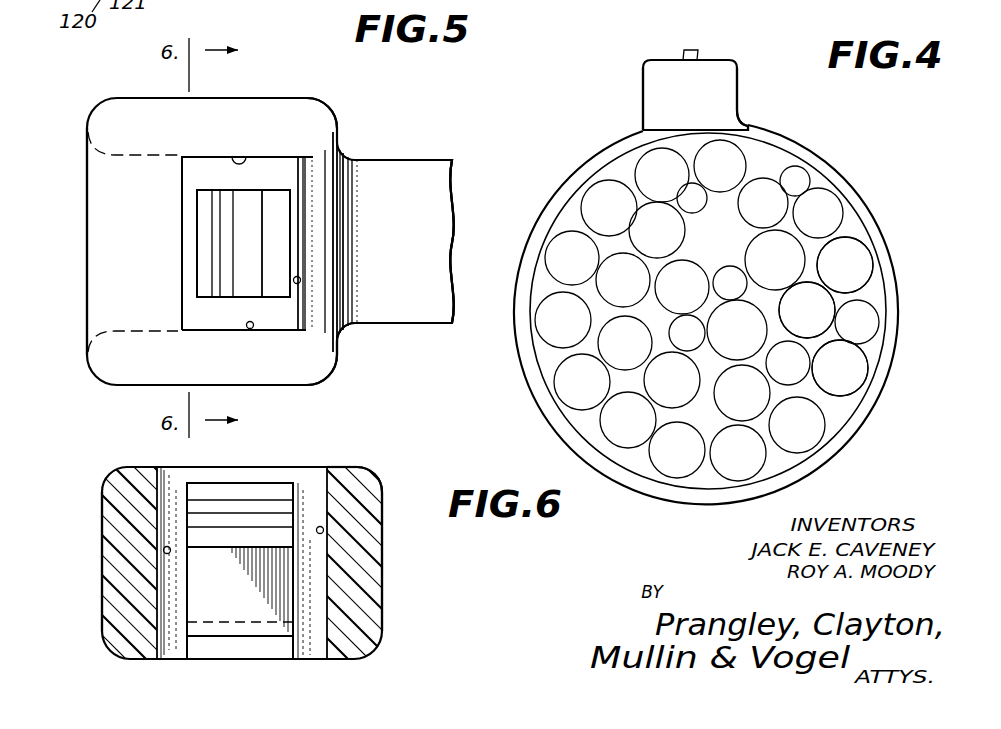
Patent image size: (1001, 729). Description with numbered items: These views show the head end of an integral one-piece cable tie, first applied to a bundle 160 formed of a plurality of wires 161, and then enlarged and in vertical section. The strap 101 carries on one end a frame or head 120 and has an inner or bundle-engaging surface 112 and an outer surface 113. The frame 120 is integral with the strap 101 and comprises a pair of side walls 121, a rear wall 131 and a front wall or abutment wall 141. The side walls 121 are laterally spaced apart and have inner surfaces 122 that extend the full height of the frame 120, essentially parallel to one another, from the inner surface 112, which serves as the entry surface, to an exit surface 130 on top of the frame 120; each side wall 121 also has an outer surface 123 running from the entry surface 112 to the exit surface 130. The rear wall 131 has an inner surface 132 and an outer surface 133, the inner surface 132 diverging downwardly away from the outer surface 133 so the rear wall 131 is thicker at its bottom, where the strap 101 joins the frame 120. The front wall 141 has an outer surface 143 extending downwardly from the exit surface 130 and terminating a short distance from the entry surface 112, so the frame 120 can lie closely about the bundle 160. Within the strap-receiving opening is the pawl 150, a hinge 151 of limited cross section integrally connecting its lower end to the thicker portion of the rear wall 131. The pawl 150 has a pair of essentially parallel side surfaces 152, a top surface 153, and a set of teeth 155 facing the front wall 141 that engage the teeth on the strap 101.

In FIG. 5, the strap 101 is at (422, 186).
In FIG. 4, the strap 101 is at (577, 185).
In FIG. 6, the inner or bundle-engaging surface 112 is at (148, 660).
In FIG. 4, the inner or bundle-engaging surface 112 is at (745, 130).
In FIG. 5, the outer surface 113 is at (389, 264).
In FIG. 5, the frame or head 120 is at (108, 126).
In FIG. 6, the frame or head 120 is at (112, 465).
In FIG. 4, the frame or head 120 is at (655, 71).
In FIG. 5, the side walls 121 is at (236, 116).
In FIG. 6, the side walls 121 is at (135, 531).
In FIG. 5, the inner surfaces 122 is at (243, 187).
In FIG. 6, the inner surfaces 122 is at (164, 552).
In FIG. 5, the outer surface 123 is at (217, 98).
In FIG. 6, the outer surface 123 is at (103, 599).
In FIG. 4, the outer surface 123 is at (705, 106).
In FIG. 5, the exit surface 130 is at (152, 118).
In FIG. 6, the exit surface 130 is at (147, 465).
In FIG. 4, the exit surface 130 is at (722, 58).
In FIG. 5, the rear wall or end wall 131 is at (338, 205).
In FIG. 6, the rear wall or end wall 131 is at (294, 465).
In FIG. 5, the inner surface 132 is at (300, 283).
In FIG. 6, the inner surface 132 is at (338, 466).
In FIG. 5, the outer surface 133 is at (343, 215).
In FIG. 4, the outer surface 133 is at (738, 93).
In FIG. 5, the front wall or abutment wall 141 is at (126, 202).
In FIG. 5, the outer surface 143 is at (88, 221).
In FIG. 4, the outer surface 143 is at (643, 89).
In FIG. 5, the pawl 150 is at (317, 209).
In FIG. 6, the pawl 150 is at (224, 480).
In FIG. 5, the hinge 151 is at (336, 352).
In FIG. 6, the hinge 151 is at (233, 623).
In FIG. 5, the side surfaces 152 is at (260, 195).
In FIG. 6, the side surfaces 152 is at (294, 603).
In FIG. 5, the top surface 153 is at (273, 211).
In FIG. 6, the top surface 153 is at (255, 483).
In FIG. 5, the teeth 155 is at (222, 253).
In FIG. 4, the bundle 160 is at (782, 261).
In FIG. 4, the wires 161 is at (840, 368).